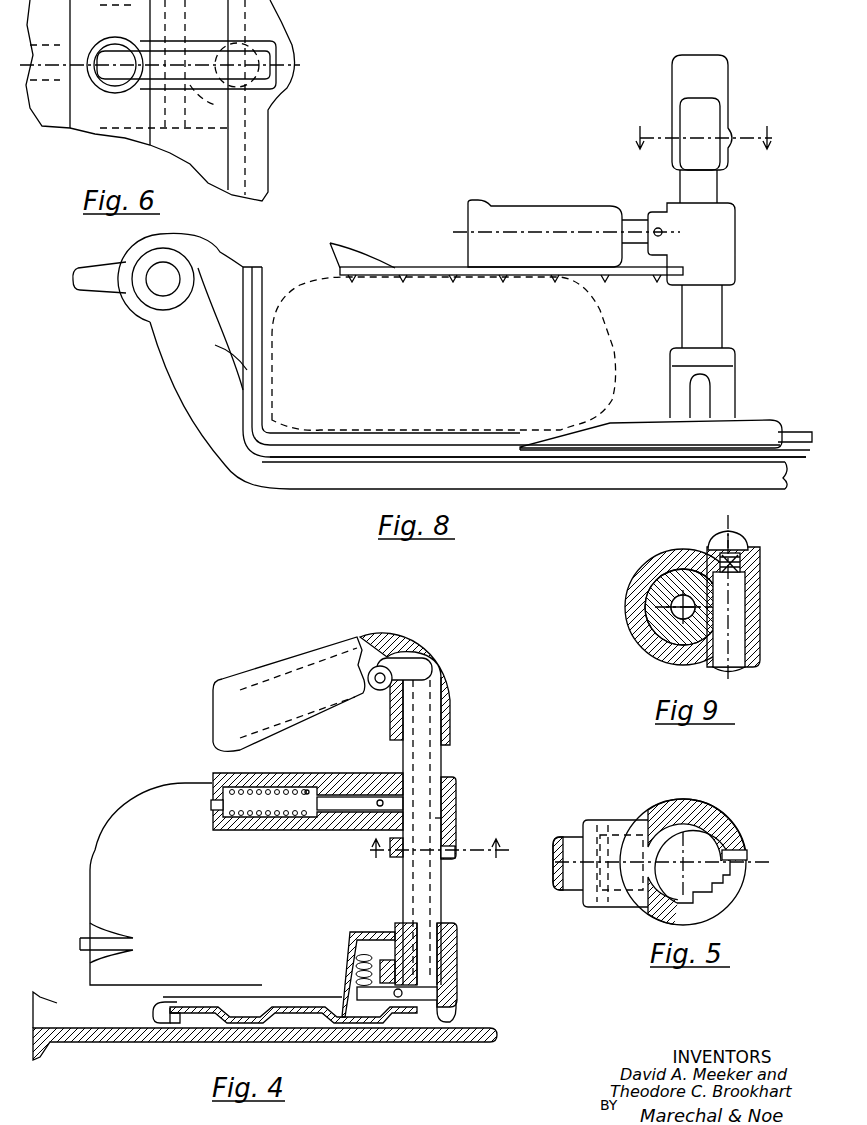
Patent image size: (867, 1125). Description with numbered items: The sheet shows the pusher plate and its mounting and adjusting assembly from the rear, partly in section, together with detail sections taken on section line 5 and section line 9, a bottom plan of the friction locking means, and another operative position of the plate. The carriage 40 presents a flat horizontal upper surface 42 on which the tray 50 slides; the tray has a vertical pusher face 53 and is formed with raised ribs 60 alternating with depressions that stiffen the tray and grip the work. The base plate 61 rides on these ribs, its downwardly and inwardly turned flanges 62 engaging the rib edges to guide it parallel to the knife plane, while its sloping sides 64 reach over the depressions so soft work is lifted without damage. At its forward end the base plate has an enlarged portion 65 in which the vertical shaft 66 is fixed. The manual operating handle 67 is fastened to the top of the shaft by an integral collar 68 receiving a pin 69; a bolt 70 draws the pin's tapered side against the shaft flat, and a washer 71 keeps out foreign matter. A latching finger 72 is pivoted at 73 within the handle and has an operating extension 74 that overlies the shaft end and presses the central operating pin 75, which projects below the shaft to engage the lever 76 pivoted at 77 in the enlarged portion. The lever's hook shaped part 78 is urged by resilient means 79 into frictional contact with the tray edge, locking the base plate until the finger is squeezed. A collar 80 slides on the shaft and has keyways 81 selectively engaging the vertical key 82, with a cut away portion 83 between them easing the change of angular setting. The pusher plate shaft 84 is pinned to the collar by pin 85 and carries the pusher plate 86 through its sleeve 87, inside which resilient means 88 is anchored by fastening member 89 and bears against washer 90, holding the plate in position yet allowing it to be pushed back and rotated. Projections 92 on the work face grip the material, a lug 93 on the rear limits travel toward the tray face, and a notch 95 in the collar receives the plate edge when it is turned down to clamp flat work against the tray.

In FIG. 8, the carriage 40 is at (297, 490).
In FIG. 4, the upper surface 42 is at (231, 1042).
In FIG. 8, the tray member 50 is at (794, 432).
In FIG. 8, the vertical pusher face 53 is at (265, 268).
In FIG. 4, the raised ribs 60 is at (193, 1010).
In FIG. 4, the base plate 61 is at (167, 1000).
In FIG. 4, the flanges 62 is at (167, 1020).
In FIG. 8, the sides 64 is at (527, 438).
In FIG. 4, the enlarged portion 65 is at (458, 950).
In FIG. 8, the shaft 66 is at (710, 325).
In FIG. 9, the shaft 66 is at (672, 554).
In FIG. 4, the shaft 66 is at (442, 766).
In FIG. 8, the manual operating handle 67 is at (713, 72).
In FIG. 4, the manual operating handle 67 is at (297, 660).
In FIG. 9, the collar 68 is at (633, 607).
In FIG. 4, the collar 68 is at (452, 710).
In FIG. 9, the pin 69 is at (740, 608).
In FIG. 9, the bolt 70 is at (735, 545).
In FIG. 9, the washer 71 is at (752, 556).
In FIG. 4, the latching finger 72 is at (273, 738).
In FIG. 4, the pivot 73 is at (380, 691).
In FIG. 4, the operating extension 74 is at (418, 666).
In FIG. 4, the central operating pin 75 is at (423, 970).
In FIG. 6, the lever 76 is at (262, 72).
In FIG. 4, the lever 76 is at (438, 995).
In FIG. 4, the pivot 77 is at (398, 998).
In FIG. 4, the hook shaped part 78 is at (433, 1022).
In FIG. 4, the resilient means 79 is at (258, 988).
In FIG. 5, the collar 80 is at (718, 812).
In FIG. 4, the collar 80 is at (457, 805).
In FIG. 5, the keyways 81 is at (687, 913).
In FIG. 4, the key 82 is at (441, 908).
In FIG. 5, the cut away portion 83 is at (748, 855).
In FIG. 5, the pusher plate shaft 84 is at (568, 840).
In FIG. 4, the pusher plate shaft 84 is at (337, 810).
In FIG. 5, the pin 85 is at (600, 820).
In FIG. 8, the pusher plate 86 is at (492, 277).
In FIG. 4, the pusher plate 86 is at (128, 818).
In FIG. 4, the sleeve 87 is at (238, 828).
In FIG. 4, the resilient means 88 is at (265, 822).
In FIG. 4, the fastening member 89 is at (211, 822).
In FIG. 4, the washer 90 is at (306, 790).
In FIG. 8, the projections 92 is at (453, 283).
In FIG. 8, the lug 93 is at (368, 262).
In FIG. 4, the notch 95 is at (380, 860).
In FIG. 4, the section line 5- 5 is at (432, 839).
In FIG. 8, the section line 9- 9 is at (701, 145).